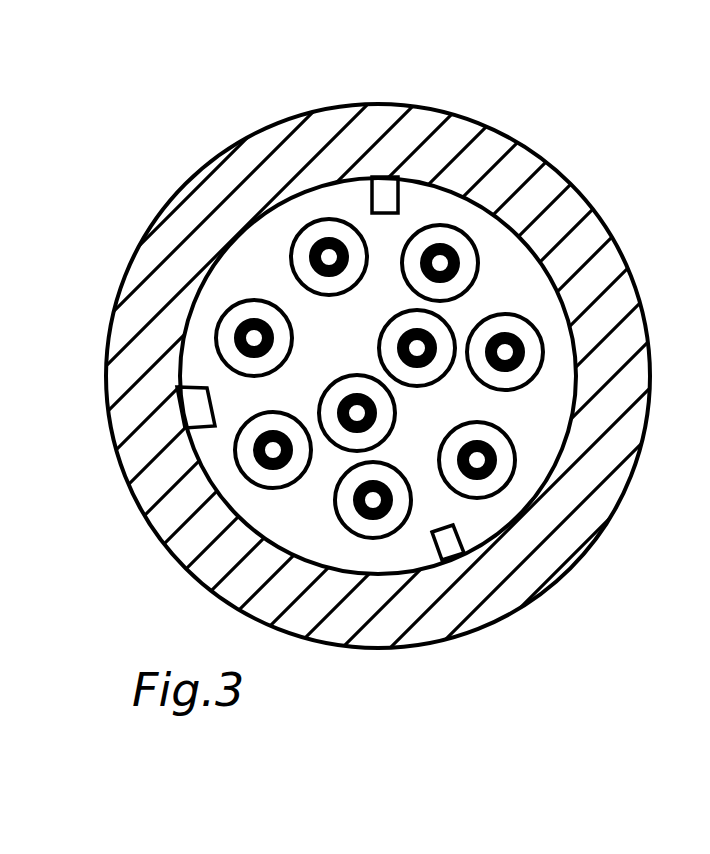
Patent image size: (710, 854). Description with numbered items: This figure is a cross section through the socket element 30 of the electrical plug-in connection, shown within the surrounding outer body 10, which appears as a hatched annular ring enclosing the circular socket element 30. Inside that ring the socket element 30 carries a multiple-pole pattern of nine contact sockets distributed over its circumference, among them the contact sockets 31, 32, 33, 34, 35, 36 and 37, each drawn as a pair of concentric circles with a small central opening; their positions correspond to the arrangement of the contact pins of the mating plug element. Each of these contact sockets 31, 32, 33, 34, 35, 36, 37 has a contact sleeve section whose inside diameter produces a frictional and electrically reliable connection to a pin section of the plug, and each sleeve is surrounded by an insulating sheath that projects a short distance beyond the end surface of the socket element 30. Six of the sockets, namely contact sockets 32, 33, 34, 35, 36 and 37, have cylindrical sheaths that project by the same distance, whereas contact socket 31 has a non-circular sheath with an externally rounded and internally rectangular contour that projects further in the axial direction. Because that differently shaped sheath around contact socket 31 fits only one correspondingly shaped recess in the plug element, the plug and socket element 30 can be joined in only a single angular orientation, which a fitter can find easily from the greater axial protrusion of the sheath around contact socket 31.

The cable jacket 10 is at (412, 145).
The socket element 30 is at (257, 263).
The contact socket 31 is at (327, 255).
The contact socket 32 is at (441, 260).
The contact socket 33 is at (507, 350).
The contact socket 34 is at (479, 462).
The contact socket 35 is at (375, 503).
The contact socket 36 is at (271, 452).
The contact socket 37 is at (253, 336).